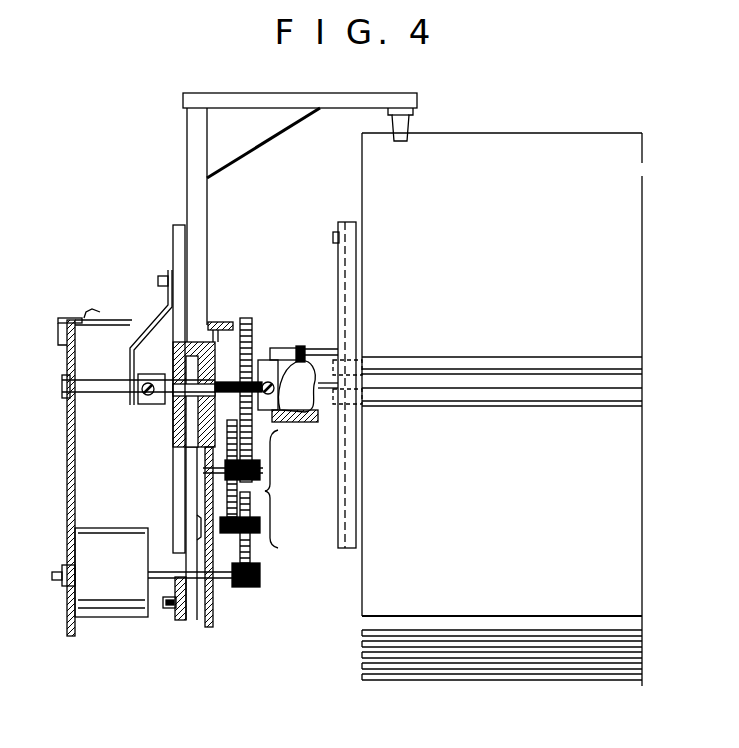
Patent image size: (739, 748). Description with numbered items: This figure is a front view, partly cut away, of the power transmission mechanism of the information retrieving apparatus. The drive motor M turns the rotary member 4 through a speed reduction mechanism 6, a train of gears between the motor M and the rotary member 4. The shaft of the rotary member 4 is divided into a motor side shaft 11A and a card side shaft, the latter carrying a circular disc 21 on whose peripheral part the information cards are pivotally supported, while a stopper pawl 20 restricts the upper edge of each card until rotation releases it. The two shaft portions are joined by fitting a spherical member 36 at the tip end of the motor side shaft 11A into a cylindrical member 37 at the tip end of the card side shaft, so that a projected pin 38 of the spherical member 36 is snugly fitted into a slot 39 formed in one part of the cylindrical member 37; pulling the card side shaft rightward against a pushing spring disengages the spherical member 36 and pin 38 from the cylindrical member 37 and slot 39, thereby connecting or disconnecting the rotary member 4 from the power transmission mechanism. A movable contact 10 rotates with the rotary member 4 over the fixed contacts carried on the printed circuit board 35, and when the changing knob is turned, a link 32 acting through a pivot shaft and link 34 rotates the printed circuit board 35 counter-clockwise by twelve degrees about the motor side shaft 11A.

The rotary member 4 is at (541, 150).
The stopper pawl 20 is at (400, 127).
The circular disc 21 is at (347, 265).
The printed circuit board 35 is at (179, 228).
The movable contact 10 is at (157, 312).
The motor side shaft 11A is at (102, 394).
The slot 39 is at (283, 356).
The projected pin 38 is at (303, 352).
The spherical member 36 is at (336, 423).
The cylindrical member 37 is at (284, 424).
The speed reduction mechanism 6 is at (250, 452).
The drive motor M is at (112, 606).
The link 32 is at (181, 622).
The link 34 is at (207, 627).